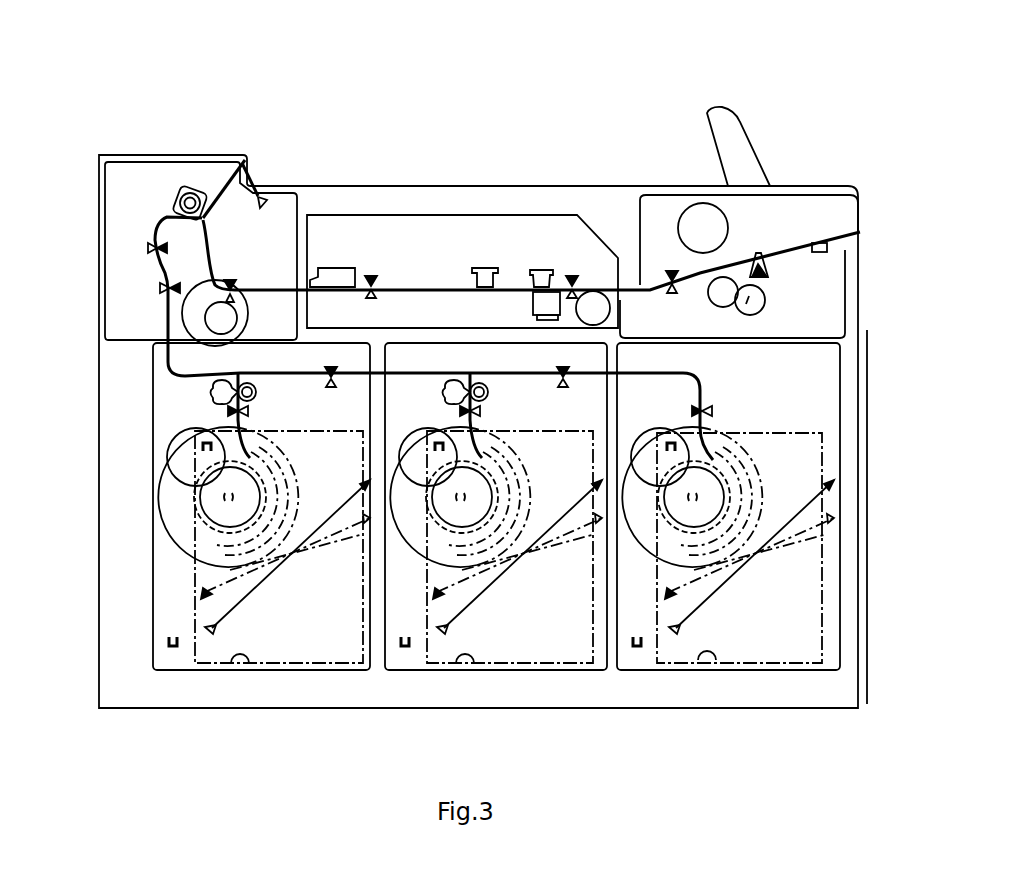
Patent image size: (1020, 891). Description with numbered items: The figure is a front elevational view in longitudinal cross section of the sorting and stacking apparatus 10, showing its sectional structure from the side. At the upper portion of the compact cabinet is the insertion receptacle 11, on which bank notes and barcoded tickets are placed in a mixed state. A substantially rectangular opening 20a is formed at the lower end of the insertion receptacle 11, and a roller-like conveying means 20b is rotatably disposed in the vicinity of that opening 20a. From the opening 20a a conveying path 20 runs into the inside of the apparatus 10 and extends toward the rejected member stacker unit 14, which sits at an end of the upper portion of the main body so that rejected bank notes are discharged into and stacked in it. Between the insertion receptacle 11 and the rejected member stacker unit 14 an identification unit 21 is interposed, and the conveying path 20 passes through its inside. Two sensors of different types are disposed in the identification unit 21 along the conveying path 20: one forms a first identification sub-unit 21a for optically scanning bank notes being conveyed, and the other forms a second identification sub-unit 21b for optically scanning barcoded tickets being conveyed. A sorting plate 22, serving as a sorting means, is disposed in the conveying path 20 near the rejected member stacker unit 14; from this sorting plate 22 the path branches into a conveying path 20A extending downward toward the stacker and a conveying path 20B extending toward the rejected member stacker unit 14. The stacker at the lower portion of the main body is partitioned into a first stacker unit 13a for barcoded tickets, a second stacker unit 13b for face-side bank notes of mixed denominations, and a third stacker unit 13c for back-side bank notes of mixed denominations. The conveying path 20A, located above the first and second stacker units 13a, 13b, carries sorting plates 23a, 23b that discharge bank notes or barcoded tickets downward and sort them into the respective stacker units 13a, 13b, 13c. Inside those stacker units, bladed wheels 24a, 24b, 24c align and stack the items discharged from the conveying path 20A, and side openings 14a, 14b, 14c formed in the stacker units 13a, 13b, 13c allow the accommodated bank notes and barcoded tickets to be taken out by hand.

The sorting and stacking apparatus 10 is at (655, 160).
The insertion receptacle 11 is at (822, 250).
The first stacker unit 13a is at (280, 664).
The second stacker unit 13b is at (496, 551).
The third stacker unit 13c is at (728, 553).
The rejected member stacker unit 14 is at (263, 198).
The side opening 14a is at (230, 662).
The side opening 14b is at (443, 705).
The side opening 14c is at (686, 704).
The conveying path 20 is at (612, 287).
The conveying path 20A is at (175, 372).
The conveying path 20B is at (200, 185).
The opening 20a is at (811, 243).
The roller-like conveying means 20b is at (733, 275).
The identification unit 21 is at (527, 55).
The first identification sub-unit 21a is at (542, 268).
The second identification sub-unit 21b is at (355, 268).
The sorting plate 22 is at (175, 200).
The sorting plate 23a is at (256, 395).
The sorting plate 23b is at (502, 397).
The bladed wheel 24a is at (292, 478).
The bladed wheel 24b is at (499, 495).
The bladed wheel 24c is at (728, 496).